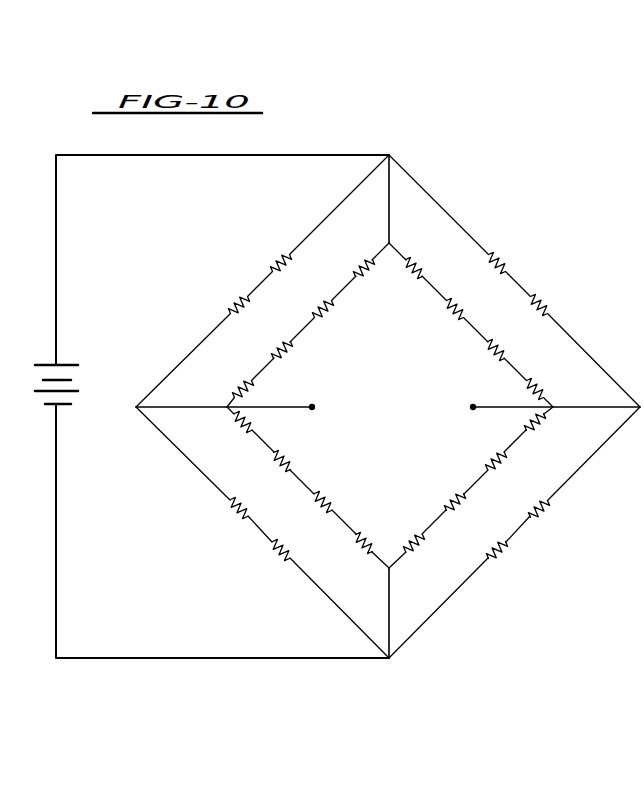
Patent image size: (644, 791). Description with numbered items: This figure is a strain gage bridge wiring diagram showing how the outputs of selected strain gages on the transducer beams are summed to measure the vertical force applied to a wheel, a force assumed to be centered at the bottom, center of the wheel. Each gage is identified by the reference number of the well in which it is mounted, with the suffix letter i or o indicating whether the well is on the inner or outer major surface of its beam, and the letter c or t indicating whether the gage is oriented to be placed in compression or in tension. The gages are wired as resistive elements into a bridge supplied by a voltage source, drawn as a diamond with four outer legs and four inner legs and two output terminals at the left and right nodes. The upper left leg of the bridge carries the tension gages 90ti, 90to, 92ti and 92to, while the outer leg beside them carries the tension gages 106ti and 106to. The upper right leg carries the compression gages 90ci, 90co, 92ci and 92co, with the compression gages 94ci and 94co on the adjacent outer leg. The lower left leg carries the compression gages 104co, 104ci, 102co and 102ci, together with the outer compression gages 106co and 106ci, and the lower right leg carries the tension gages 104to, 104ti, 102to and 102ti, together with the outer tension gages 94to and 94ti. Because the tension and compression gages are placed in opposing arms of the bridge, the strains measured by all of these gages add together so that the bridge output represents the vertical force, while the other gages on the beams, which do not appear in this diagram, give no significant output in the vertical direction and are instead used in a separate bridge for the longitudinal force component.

The strain gage in well 90ti is at (358, 262).
The strain gage in well 90to is at (318, 304).
The strain gage in well 92ti is at (277, 346).
The strain gage in well 92to is at (239, 386).
The strain gage in well 106ti is at (276, 258).
The strain gage in well 106to is at (236, 300).
The strain gage in well 90ci is at (442, 256).
The strain gage in well 90co is at (452, 313).
The strain gage in well 92ci is at (513, 336).
The strain gage in well 92co is at (543, 384).
The strain gage in well 94ci is at (504, 258).
The strain gage in well 94co is at (548, 300).
The strain gage in well 102ci is at (358, 548).
The strain gage in well 102co is at (318, 507).
The strain gage in well 104ci is at (278, 467).
The strain gage in well 104co is at (242, 428).
The strain gage in well 106ci is at (280, 556).
The strain gage in well 106co is at (236, 512).
The strain gage in well 102ti is at (420, 550).
The strain gage in well 102to is at (459, 510).
The strain gage in well 104ti is at (498, 468).
The strain gage in well 104to is at (538, 430).
The strain gage in well 94ti is at (503, 557).
The strain gage in well 94to is at (546, 514).